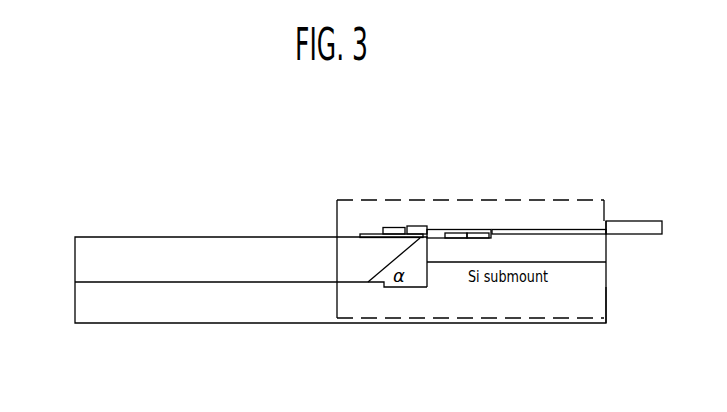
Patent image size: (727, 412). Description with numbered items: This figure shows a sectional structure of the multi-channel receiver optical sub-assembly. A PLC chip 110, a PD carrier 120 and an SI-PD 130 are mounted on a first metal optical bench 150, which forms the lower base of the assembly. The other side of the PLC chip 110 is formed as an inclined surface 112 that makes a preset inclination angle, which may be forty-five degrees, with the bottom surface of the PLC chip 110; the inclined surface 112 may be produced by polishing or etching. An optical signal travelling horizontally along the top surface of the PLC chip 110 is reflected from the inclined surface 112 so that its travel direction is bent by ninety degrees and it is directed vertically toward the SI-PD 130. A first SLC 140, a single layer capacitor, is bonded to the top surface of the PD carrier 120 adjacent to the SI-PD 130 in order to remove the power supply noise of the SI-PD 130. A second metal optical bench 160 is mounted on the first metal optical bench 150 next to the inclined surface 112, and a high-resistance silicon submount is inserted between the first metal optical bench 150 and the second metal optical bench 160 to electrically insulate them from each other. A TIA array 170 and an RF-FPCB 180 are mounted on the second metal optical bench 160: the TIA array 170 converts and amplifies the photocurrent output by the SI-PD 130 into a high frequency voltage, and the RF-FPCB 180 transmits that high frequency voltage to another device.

The PLC chip 110 is at (87, 259).
The inclined surface 112 is at (390, 282).
The PD carrier 120 is at (375, 234).
The SI-PD 130 is at (418, 226).
The first SLC 140 is at (390, 227).
The first metal optical bench 150 is at (87, 301).
The second metal optical bench 160 is at (597, 250).
The TIA array 170 is at (457, 229).
The RF-FPCB 180 is at (532, 229).